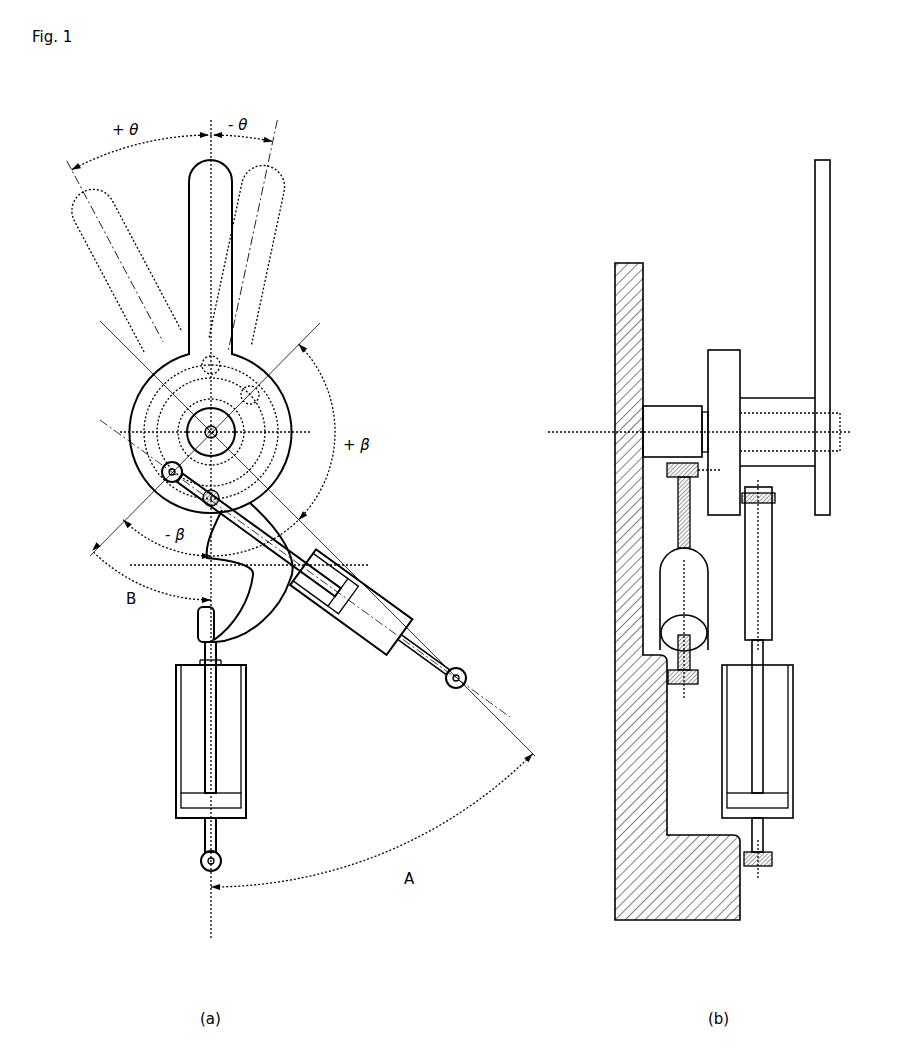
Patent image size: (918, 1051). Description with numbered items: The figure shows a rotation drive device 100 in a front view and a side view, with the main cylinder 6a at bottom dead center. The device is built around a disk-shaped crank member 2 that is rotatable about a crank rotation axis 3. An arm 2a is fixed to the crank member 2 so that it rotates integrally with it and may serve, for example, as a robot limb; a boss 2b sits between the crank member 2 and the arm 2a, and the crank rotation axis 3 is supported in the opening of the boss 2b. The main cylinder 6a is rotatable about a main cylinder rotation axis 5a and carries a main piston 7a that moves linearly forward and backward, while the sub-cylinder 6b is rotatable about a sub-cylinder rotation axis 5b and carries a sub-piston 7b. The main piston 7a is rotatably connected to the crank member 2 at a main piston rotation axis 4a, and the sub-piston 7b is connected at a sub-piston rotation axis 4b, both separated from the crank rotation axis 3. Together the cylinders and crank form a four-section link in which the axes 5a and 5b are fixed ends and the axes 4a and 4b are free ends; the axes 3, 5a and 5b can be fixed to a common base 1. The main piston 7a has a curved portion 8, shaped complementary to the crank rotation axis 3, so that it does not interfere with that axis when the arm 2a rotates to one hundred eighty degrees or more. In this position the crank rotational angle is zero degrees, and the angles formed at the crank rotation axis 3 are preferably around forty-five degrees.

The rotation drive device 100 is at (418, 71).
The base 1 is at (640, 872).
The crank member 2 is at (130, 430).
The arm 2a is at (228, 228).
The boss 2b is at (768, 395).
The crank rotation axis 3 is at (135, 388).
The main piston rotation axis 4a is at (203, 498).
The sub-piston rotation axis 4b is at (162, 472).
The main cylinder rotation axis 5a is at (200, 860).
The sub-cylinder rotation axis 5b is at (464, 670).
The main cylinder 6a is at (190, 750).
The sub-cylinder 6b is at (370, 632).
The main piston 7a is at (205, 648).
The sub-piston 7b is at (320, 545).
The curved portion 8 is at (260, 615).